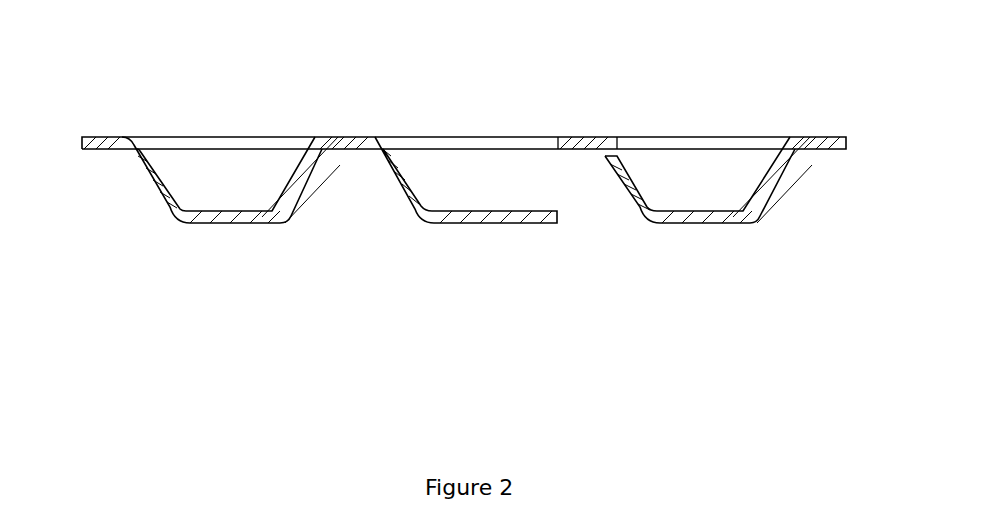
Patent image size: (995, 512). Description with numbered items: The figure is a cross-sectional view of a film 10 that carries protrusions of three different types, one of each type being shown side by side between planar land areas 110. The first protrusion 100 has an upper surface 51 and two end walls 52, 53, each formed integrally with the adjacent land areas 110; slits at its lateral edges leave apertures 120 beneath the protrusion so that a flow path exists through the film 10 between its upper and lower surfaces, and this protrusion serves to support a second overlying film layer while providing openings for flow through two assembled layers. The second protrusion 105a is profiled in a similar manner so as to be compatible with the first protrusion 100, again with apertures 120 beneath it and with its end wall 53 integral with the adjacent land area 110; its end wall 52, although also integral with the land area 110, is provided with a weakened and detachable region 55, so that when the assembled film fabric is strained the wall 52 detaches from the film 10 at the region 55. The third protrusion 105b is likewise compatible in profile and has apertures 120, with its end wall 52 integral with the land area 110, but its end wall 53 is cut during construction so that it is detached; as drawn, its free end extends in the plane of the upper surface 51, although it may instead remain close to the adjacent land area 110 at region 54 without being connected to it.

The film 10 is at (750, 99).
The planar land areas 110 is at (585, 132).
The first protrusion 100 is at (212, 312).
The third protrusion 105b is at (482, 317).
The second protrusion 105a is at (748, 317).
The apertures 120 is at (464, 179).
The upper surface 51 is at (197, 213).
The end wall 52 is at (142, 170).
The end wall 53 is at (309, 172).
The region 54 is at (602, 162).
The weakened and detachable region 55 is at (547, 173).